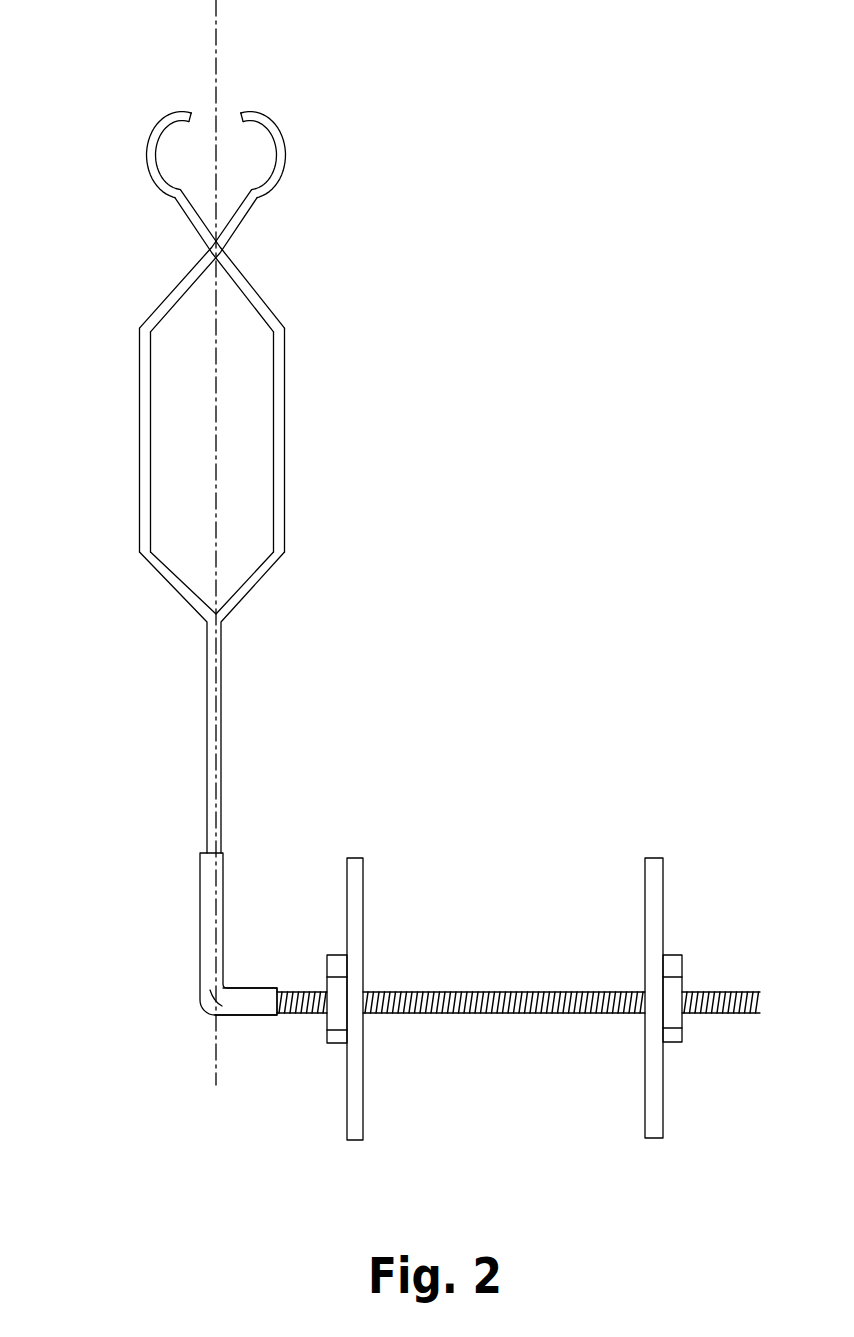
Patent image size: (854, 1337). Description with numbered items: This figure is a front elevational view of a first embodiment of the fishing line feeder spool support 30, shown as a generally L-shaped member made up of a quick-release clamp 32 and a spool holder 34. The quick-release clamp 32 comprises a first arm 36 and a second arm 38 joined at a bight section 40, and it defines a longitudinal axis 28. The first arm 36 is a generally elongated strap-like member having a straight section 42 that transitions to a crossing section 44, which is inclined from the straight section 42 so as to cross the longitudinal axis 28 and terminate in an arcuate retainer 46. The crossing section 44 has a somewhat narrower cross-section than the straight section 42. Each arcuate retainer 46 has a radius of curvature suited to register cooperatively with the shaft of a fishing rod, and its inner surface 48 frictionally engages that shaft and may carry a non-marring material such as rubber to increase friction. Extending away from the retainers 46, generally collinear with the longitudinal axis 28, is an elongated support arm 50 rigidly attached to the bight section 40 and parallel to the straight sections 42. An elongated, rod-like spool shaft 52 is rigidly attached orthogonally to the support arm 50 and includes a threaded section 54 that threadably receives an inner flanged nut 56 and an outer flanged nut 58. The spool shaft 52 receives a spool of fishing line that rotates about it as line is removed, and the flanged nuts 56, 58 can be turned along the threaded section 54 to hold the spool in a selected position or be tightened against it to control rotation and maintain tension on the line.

The longitudinal axis 28 is at (222, 22).
The fishing line feeder spool support 30 is at (484, 766).
The quick-release clamp 32 is at (318, 570).
The spool holder 34 is at (531, 923).
The first arm 36 is at (294, 481).
The second arm 38 is at (129, 505).
The bight section 40 is at (172, 604).
The straight section 42 is at (139, 410).
The crossing section 44 is at (166, 298).
The arcuate retainer 46 is at (148, 160).
The inner surface 48 is at (197, 117).
The support arm 50 is at (218, 852).
The spool shaft 52 is at (268, 995).
The threaded section 54 is at (441, 995).
The inner flanged nut 56 is at (358, 893).
The outer flanged nut 58 is at (654, 868).